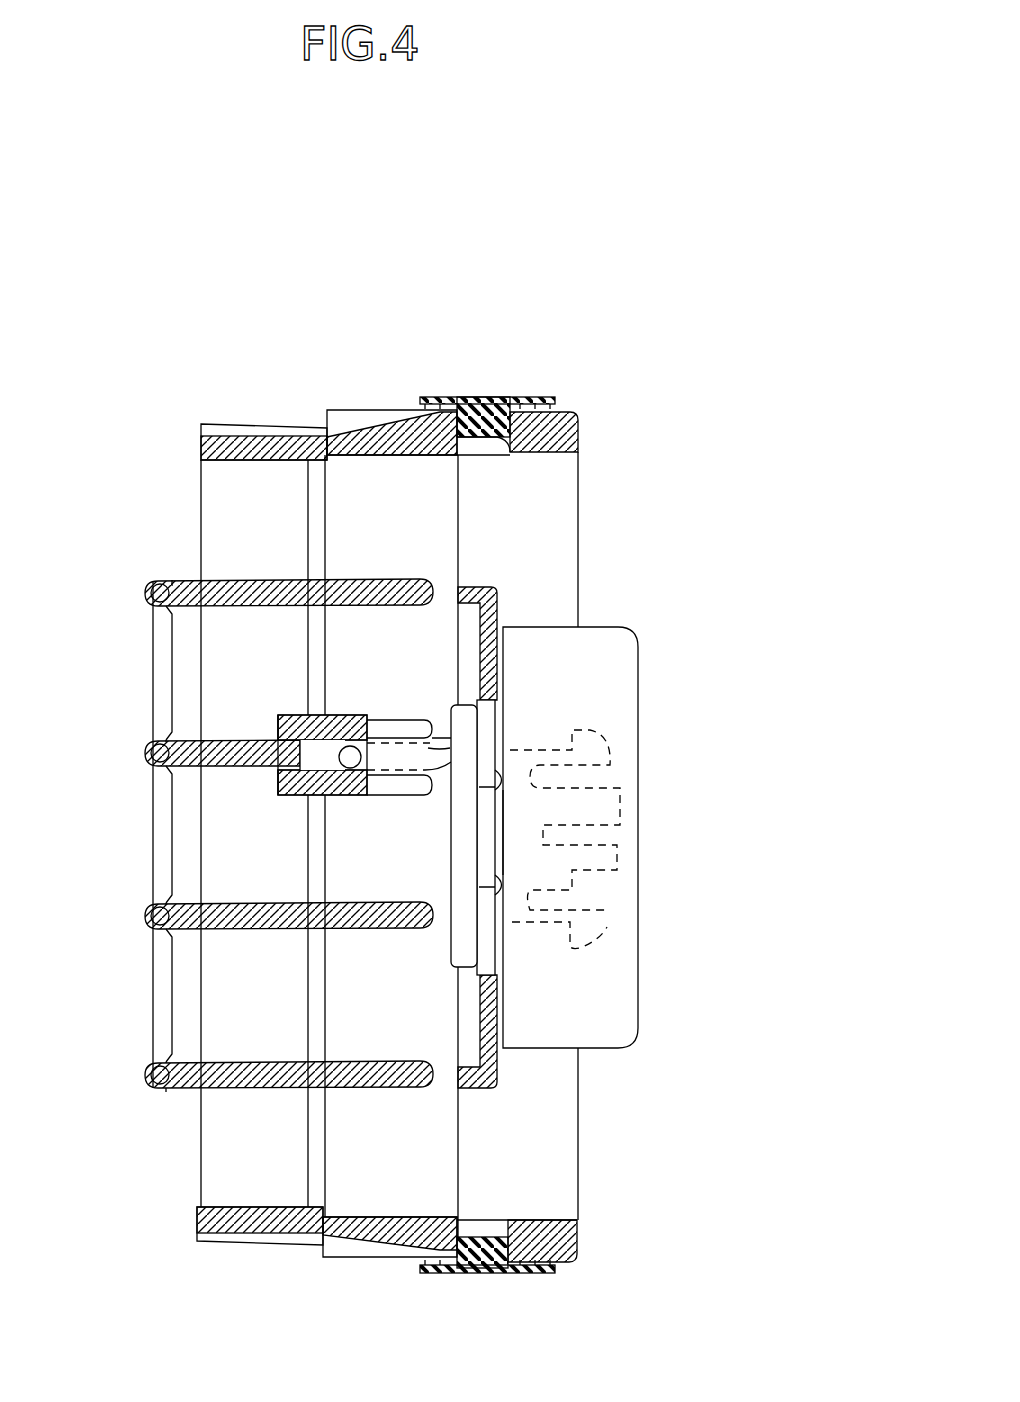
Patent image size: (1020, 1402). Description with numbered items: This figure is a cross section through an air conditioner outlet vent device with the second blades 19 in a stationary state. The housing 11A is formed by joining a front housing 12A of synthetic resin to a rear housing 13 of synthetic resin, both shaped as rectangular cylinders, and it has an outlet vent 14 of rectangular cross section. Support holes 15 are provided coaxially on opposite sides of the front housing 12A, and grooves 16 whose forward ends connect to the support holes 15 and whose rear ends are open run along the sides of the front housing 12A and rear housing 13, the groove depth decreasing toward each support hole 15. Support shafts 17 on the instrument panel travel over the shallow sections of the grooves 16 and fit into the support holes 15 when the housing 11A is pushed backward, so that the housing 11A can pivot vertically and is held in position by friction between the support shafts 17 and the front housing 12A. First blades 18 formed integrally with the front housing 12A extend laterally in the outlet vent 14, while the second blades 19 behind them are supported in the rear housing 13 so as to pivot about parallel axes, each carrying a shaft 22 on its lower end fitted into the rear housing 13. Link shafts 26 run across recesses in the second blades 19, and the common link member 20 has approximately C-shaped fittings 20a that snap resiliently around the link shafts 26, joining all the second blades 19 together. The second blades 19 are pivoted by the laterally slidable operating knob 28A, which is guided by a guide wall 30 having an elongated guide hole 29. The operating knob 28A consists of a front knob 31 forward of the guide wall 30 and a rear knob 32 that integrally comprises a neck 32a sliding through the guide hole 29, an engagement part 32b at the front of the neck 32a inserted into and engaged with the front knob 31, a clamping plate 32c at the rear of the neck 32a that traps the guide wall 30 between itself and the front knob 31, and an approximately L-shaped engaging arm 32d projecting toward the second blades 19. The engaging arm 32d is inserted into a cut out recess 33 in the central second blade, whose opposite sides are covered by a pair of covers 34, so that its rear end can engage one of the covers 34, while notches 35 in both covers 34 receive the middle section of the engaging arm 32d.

The housing 11A is at (425, 290).
The front housing 12A is at (388, 418).
The rear housing 13 is at (243, 430).
The outlet vent 14 is at (543, 1218).
The support hole 15 is at (512, 445).
The groove 16 is at (222, 432).
The support shaft 17 is at (487, 410).
The first blade 18 is at (570, 505).
The second blade 19 is at (415, 583).
The link member 20 is at (178, 826).
The fitting 20a is at (172, 578).
The shaft 22 is at (283, 582).
The link shaft 26 is at (163, 583).
The operating knob 28A is at (768, 575).
The guide hole 29 is at (487, 955).
The guide wall 30 is at (500, 1028).
The front knob 31 is at (627, 747).
The rear knob 32 is at (614, 775).
The neck 32a is at (500, 837).
The engagement part 32b is at (607, 927).
The clamping plate 32c is at (505, 620).
The engaging arm 32d is at (432, 795).
The cut out recess 33 is at (340, 768).
The cover 34 is at (333, 715).
The notch 35 is at (410, 720).